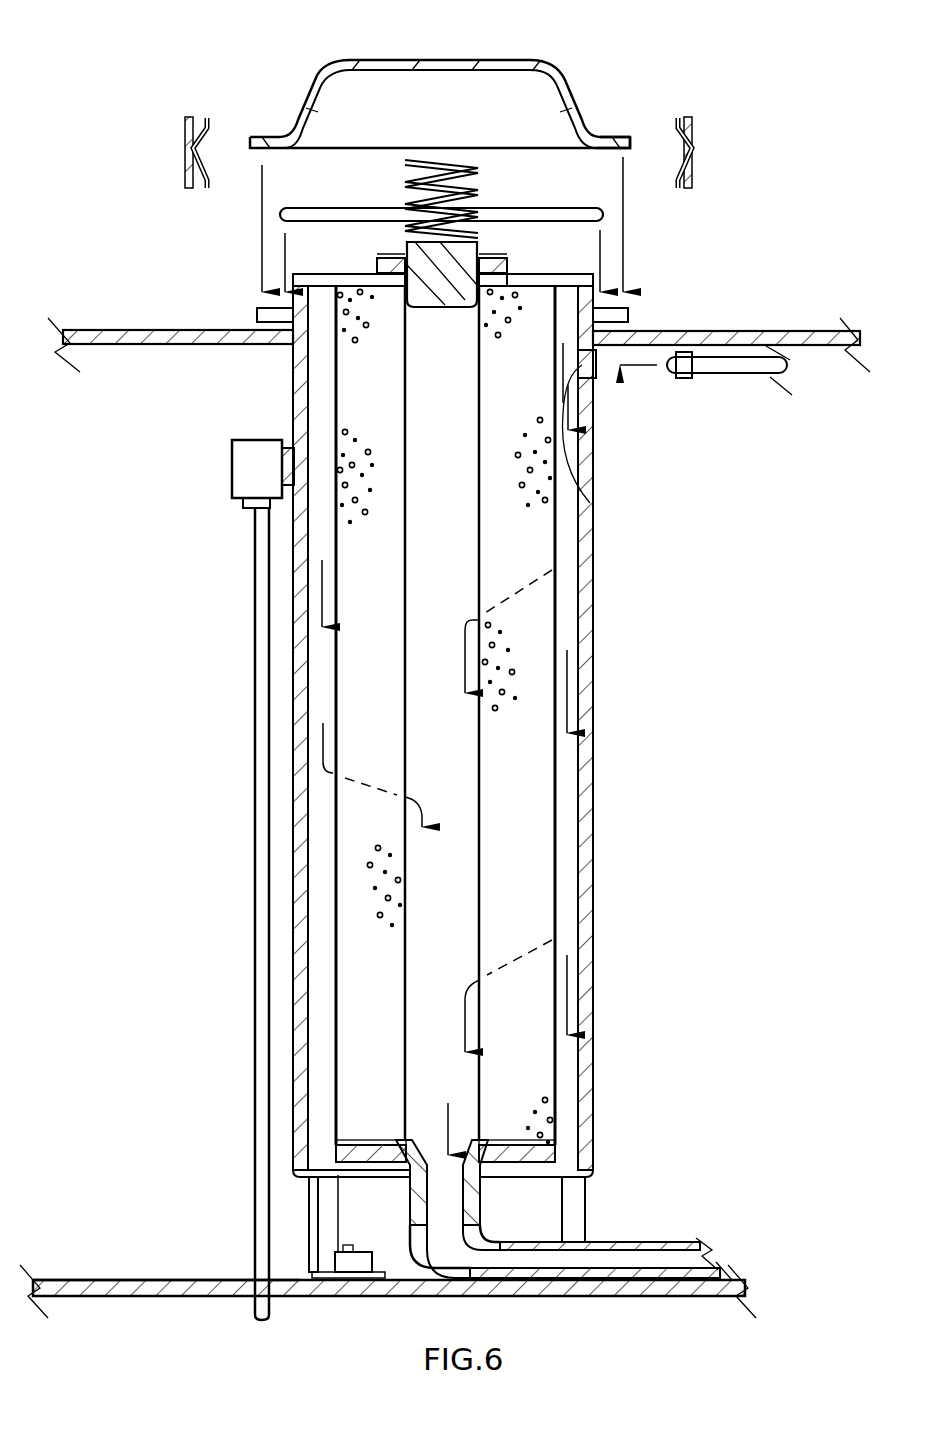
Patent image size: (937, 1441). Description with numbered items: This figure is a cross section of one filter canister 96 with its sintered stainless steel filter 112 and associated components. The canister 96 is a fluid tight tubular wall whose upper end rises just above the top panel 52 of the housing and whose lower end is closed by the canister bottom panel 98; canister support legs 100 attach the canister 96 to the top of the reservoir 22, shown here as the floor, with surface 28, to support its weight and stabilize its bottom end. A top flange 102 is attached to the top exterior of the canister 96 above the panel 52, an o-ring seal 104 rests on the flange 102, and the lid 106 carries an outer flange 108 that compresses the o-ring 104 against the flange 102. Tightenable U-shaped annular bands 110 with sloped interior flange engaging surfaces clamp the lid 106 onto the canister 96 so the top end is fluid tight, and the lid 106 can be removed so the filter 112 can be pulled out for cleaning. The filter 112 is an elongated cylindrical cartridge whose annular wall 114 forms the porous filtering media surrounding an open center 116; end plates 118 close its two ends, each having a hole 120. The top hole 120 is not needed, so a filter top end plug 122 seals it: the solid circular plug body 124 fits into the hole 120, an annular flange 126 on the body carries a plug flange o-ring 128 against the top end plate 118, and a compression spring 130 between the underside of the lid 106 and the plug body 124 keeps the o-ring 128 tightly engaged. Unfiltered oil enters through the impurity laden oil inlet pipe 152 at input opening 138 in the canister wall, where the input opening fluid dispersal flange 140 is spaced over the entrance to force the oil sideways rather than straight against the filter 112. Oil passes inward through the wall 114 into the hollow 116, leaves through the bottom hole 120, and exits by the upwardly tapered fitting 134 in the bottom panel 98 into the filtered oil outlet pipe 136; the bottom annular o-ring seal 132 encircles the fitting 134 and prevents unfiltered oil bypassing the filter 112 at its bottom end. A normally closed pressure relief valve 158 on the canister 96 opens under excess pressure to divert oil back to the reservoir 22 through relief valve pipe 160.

The reservoir 22 is at (178, 1278).
The floor surface 28 is at (75, 1278).
The top panel 52 is at (147, 328).
The filter canister 96 is at (374, 740).
The canister bottom panel 98 is at (582, 1180).
The canister support legs 100 is at (322, 1203).
The top flange 102 is at (630, 315).
The o-ring seal 104 is at (606, 214).
The lid 106 is at (550, 72).
The outer flange 108 is at (622, 137).
The U-shaped annular band 110 is at (185, 143).
The sintered stainless steel filter 112 is at (347, 381).
The annular wall 114 is at (347, 405).
The open center 116 is at (462, 538).
The end plate 118 is at (380, 272).
The hole 120 is at (481, 312).
The filter top end plug 122 is at (420, 268).
The plug body 124 is at (462, 272).
The annular flange 126 is at (490, 278).
The plug flange o-ring 128 is at (490, 263).
The spring 130 is at (447, 157).
The bottom annular o-ring seal 132 is at (565, 1158).
The fitting 134 is at (417, 1215).
The filtered oil outlet pipe 136 is at (674, 1248).
The input opening 138 is at (596, 378).
The input opening fluid dispersal flange 140 is at (613, 440).
The impurity laden oil inlet pipe 152 is at (752, 370).
The pressure relief valve 158 is at (233, 484).
The relief valve pipe 160 is at (254, 670).